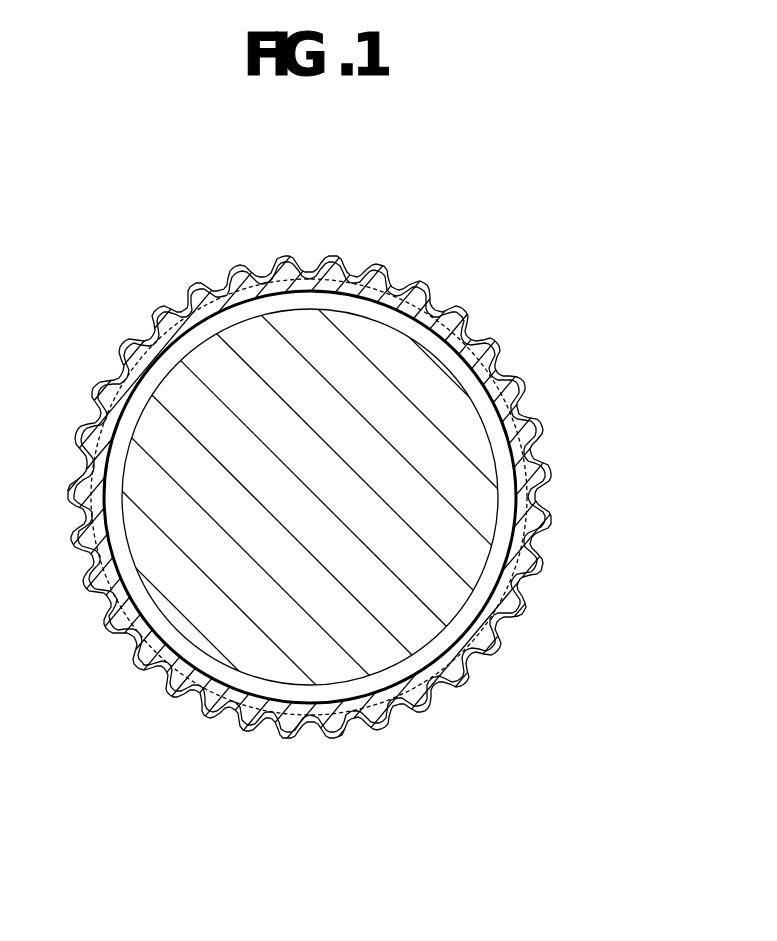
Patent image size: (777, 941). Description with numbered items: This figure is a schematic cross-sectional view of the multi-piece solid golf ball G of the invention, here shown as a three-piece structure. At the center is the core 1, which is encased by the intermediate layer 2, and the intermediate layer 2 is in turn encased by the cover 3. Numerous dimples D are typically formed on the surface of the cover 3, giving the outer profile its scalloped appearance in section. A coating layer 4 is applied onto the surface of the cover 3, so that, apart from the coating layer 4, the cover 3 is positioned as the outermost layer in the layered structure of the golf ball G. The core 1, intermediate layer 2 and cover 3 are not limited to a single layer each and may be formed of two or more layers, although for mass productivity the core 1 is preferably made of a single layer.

The golf ball G is at (97, 292).
The core 1 is at (460, 545).
The intermediate layer 2 is at (493, 643).
The cover 3 is at (443, 693).
The coating layer 4 is at (387, 730).
The dimples D is at (455, 310).